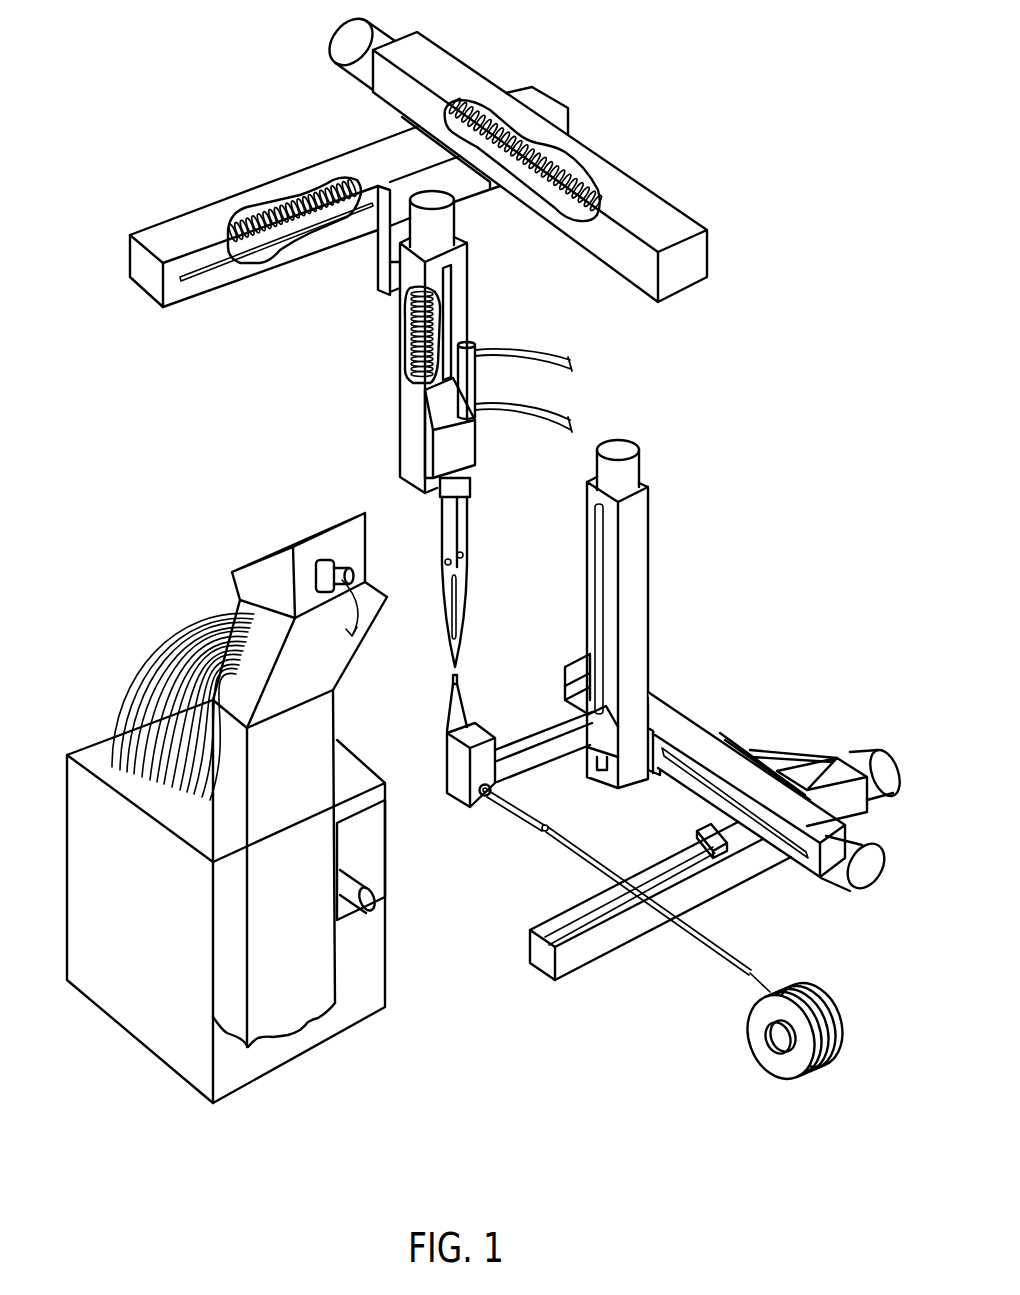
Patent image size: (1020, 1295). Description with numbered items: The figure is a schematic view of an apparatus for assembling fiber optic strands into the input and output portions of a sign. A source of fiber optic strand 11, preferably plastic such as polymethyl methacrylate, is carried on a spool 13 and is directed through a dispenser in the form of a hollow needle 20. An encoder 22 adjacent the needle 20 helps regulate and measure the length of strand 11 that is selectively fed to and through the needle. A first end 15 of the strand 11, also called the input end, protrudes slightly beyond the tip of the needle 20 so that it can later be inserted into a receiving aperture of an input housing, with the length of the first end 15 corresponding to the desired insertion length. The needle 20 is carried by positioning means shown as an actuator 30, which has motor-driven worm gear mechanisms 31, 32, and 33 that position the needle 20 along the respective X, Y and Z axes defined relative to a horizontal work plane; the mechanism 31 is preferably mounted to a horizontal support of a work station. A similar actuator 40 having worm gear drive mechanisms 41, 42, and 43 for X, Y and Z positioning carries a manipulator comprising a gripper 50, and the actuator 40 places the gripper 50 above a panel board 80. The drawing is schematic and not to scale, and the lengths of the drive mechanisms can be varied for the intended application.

The fiber optic strand 11 is at (768, 983).
The spool 13 is at (827, 994).
The first end 15 is at (459, 678).
The hollow needle 20 is at (448, 708).
The encoder 22 is at (458, 796).
The actuator 30 is at (652, 693).
The worm gear mechanism 31 is at (597, 953).
The worm gear mechanism 32 is at (846, 826).
The worm gear mechanism 33 is at (649, 514).
The actuator 40 is at (403, 133).
The worm gear drive mechanism 41 is at (170, 220).
The worm gear drive mechanism 42 is at (443, 59).
The worm gear drive mechanism 43 is at (399, 424).
The gripper 50 is at (467, 562).
The panel board 80 is at (104, 738).